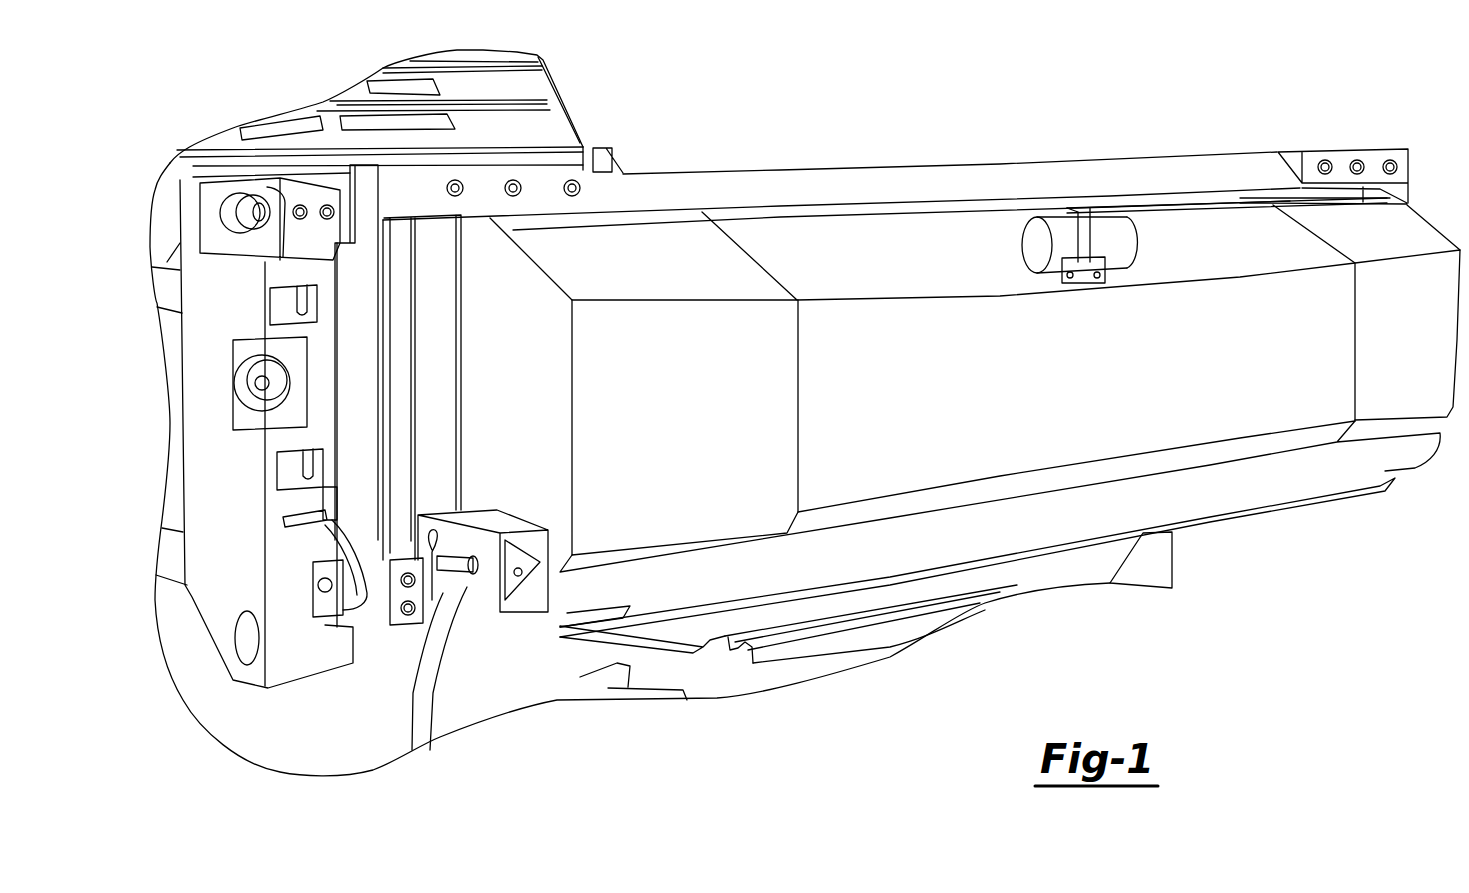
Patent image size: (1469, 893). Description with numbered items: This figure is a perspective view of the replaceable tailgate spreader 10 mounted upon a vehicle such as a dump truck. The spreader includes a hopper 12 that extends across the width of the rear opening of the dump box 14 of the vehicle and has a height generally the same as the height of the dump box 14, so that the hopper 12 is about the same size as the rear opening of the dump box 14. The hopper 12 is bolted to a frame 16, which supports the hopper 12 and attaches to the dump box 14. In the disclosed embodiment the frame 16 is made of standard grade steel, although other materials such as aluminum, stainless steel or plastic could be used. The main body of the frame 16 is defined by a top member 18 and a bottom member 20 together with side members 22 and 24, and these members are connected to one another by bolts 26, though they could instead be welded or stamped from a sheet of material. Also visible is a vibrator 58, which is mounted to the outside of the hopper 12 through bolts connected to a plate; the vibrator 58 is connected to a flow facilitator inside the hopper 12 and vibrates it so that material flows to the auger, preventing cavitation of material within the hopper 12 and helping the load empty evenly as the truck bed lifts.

The tailgate spreader 10 is at (755, 140).
The hopper 12 is at (688, 428).
The dump box 14 is at (218, 606).
The frame 16 is at (1175, 170).
The top member 18 is at (911, 184).
The bottom member 20 is at (1043, 550).
The side member 22 is at (445, 443).
The side member 24 is at (1372, 160).
The bolts 26 is at (548, 186).
The vibrator 58 is at (1112, 232).